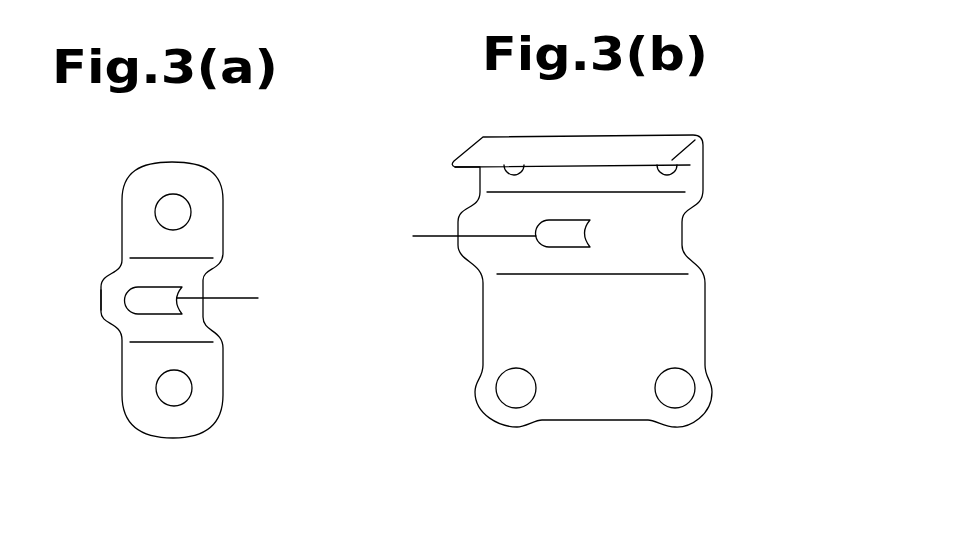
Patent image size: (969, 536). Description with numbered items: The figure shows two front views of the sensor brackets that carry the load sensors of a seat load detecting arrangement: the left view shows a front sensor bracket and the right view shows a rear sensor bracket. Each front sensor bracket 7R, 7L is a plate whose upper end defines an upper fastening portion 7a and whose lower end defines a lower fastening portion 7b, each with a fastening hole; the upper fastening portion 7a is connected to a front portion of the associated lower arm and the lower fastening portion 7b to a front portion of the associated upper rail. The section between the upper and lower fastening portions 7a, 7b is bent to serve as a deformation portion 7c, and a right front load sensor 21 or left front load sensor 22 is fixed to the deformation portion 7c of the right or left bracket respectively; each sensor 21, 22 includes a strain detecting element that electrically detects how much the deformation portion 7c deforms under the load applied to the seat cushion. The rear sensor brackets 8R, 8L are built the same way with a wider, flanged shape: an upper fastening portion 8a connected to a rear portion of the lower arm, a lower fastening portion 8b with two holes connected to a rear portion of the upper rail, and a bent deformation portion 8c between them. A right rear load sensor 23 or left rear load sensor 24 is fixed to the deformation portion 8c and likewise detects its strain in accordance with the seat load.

In FIG. 3A, the right front sensor bracket 7R is at (232, 300).
In FIG. 3A, the left front sensor bracket 7L is at (237, 206).
In FIG. 3A, the upper fastening portion 7a is at (223, 232).
In FIG. 3A, the lower fastening portion 7b is at (223, 375).
In FIG. 3A, the deformation portion 7c is at (103, 314).
In FIG. 3A, the left front load sensor 22 is at (229, 285).
In FIG. 3A, the right front load sensor 21 is at (177, 277).
In FIG. 3B, the right rear sensor bracket 8R is at (649, 263).
In FIG. 3B, the left rear sensor bracket 8L is at (723, 138).
In FIG. 3B, the upper fastening portion 8a is at (703, 170).
In FIG. 3B, the lower fastening portion 8b is at (707, 383).
In FIG. 3B, the deformation portion 8c is at (683, 258).
In FIG. 3B, the left rear load sensor 24 is at (605, 227).
In FIG. 3B, the right rear load sensor 23 is at (573, 221).